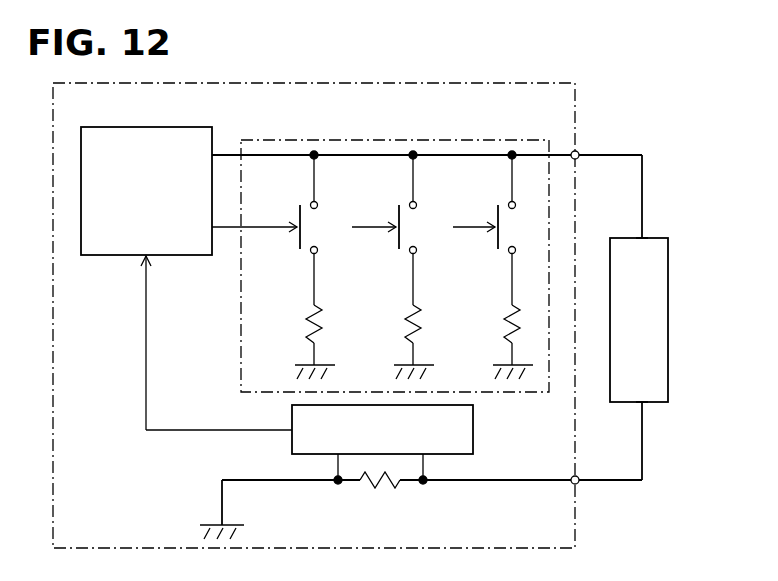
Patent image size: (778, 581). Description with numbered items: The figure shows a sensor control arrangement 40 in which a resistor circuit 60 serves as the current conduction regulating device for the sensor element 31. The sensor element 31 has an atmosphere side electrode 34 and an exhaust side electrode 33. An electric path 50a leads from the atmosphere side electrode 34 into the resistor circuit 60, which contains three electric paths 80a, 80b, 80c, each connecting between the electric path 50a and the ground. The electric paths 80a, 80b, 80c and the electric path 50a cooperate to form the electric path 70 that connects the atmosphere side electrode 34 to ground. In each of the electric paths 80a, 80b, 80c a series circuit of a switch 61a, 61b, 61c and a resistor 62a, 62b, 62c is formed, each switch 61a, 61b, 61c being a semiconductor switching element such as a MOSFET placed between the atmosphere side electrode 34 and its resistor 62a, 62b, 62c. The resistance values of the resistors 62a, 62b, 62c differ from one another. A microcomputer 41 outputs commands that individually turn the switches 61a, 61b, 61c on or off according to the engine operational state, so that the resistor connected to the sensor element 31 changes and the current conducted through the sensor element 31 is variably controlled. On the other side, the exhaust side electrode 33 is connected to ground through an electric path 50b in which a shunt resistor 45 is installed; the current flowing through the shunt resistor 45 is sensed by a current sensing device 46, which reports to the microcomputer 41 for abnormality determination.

The control device / outer unit 40 is at (572, 83).
The microcomputer 41 is at (196, 127).
The resistor circuit 60 is at (546, 140).
The electric path 80a is at (513, 178).
The electric path 80b is at (414, 178).
The electric path 80c is at (315, 178).
The switch 61a is at (497, 211).
The switch 61b is at (398, 211).
The switch 61c is at (299, 211).
The resistor 62a is at (508, 305).
The resistor 62b is at (409, 305).
The resistor 62c is at (310, 305).
The electric path 70 is at (620, 155).
The electric path 50a is at (642, 187).
The electric path 50b is at (625, 482).
The sensor element 31 is at (668, 312).
The atmosphere side electrode 34 is at (673, 229).
The exhaust side electrode 33 is at (668, 415).
The shunt resistor 45 is at (367, 486).
The current sensing device 46 is at (474, 440).